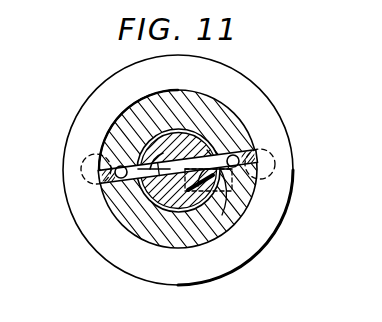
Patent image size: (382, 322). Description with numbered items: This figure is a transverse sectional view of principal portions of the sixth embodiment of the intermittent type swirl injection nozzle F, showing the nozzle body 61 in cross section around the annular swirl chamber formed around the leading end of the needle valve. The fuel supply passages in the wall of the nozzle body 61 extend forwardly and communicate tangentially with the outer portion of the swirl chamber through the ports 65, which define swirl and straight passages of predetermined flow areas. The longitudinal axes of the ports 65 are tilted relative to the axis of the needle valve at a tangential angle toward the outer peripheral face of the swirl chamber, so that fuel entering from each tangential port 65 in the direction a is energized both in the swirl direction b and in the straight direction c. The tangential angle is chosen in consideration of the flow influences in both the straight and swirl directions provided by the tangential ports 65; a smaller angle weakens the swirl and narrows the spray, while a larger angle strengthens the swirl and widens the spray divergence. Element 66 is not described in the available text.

The intermittent type swirl injection nozzle F is at (276, 91).
The nozzle body 61 is at (277, 135).
The ports 65 is at (135, 167).
The ball return member 66 is at (101, 182).
The direction of fuel flow from the tangential port a is at (213, 198).
The swirl direction b is at (244, 188).
The straight direction c is at (212, 143).